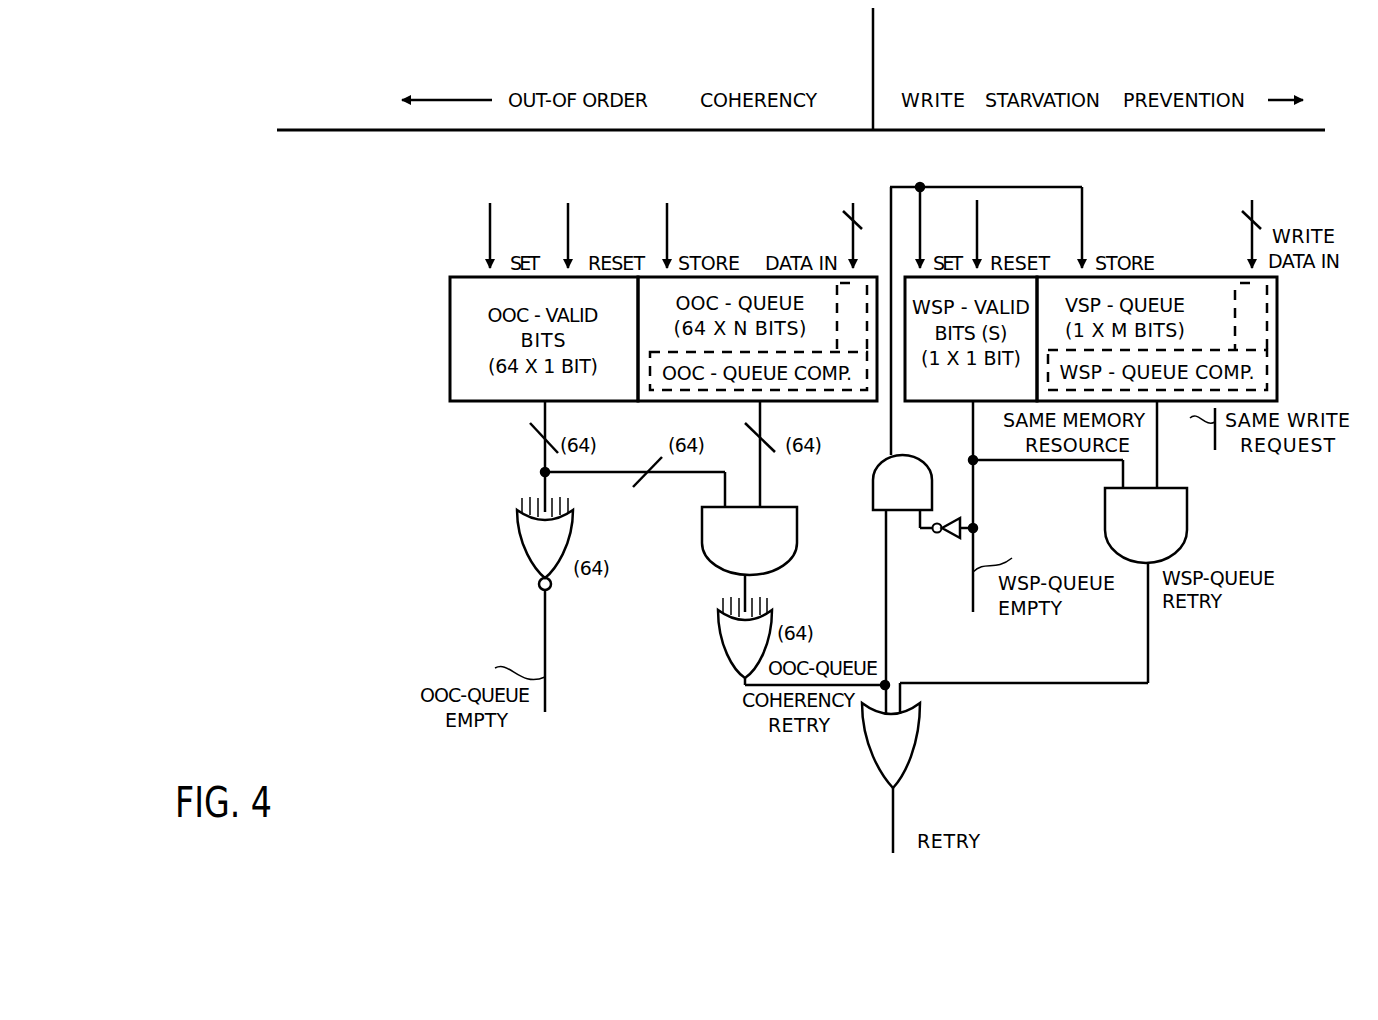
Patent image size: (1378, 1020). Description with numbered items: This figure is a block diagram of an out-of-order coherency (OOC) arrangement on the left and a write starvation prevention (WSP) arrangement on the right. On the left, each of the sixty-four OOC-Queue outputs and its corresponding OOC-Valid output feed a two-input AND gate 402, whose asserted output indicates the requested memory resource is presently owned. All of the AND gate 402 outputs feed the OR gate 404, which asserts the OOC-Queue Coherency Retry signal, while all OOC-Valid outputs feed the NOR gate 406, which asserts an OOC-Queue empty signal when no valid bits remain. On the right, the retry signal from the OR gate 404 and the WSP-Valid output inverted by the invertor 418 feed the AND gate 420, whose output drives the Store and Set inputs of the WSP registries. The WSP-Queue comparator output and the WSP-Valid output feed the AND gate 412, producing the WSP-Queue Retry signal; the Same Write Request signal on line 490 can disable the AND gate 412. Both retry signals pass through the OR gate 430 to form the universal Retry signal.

The two-input AND gate 402 is at (797, 528).
The OR gate 404 is at (718, 648).
The NOR gate 406 is at (573, 525).
The AND gate 412 is at (1187, 505).
The invertor 418 is at (950, 538).
The AND gate 420 is at (920, 456).
The OR gate 430 is at (920, 750).
The line 490 is at (1157, 398).